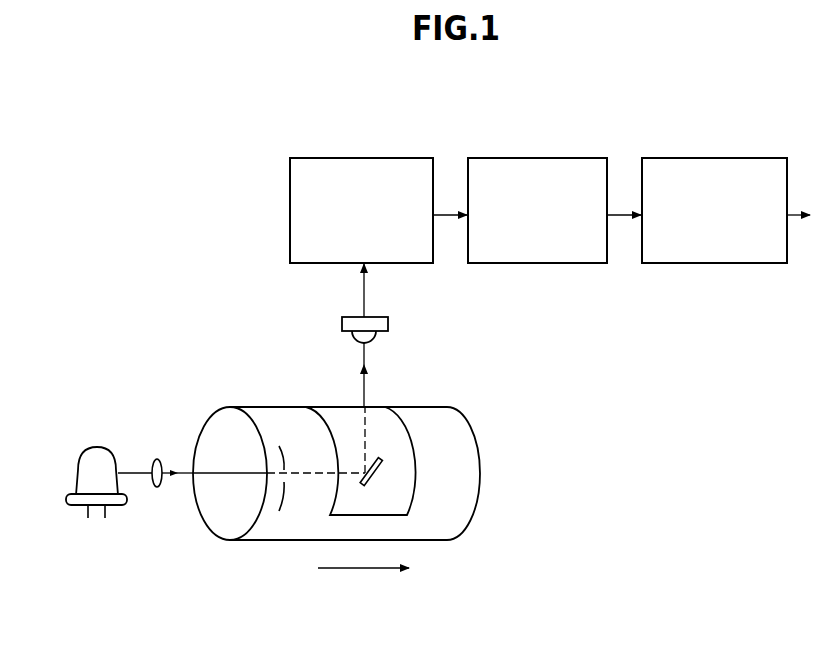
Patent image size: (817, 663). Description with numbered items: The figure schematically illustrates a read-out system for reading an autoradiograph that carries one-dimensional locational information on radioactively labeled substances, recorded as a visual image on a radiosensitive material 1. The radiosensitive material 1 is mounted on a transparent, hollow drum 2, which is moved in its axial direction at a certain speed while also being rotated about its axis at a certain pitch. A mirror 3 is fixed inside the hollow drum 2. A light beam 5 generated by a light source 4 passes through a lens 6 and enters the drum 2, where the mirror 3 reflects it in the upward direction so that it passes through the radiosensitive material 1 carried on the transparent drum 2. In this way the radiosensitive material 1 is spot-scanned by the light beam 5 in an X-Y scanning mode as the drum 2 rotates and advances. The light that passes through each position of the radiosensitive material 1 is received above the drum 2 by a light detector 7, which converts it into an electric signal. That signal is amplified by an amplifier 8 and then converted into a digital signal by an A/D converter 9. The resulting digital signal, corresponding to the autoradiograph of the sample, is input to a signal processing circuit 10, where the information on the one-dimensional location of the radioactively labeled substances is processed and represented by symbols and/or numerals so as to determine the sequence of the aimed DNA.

The radiosensitive material 1 is at (393, 500).
The drum 2 is at (285, 527).
The mirror 3 is at (386, 463).
The light source 4 is at (98, 445).
The light beam 5 is at (137, 477).
The lens 6 is at (155, 459).
The light detector 7 is at (342, 326).
The amplifier 8 is at (375, 158).
The A/D converter 9 is at (570, 158).
The signal processing circuit 10 is at (753, 158).